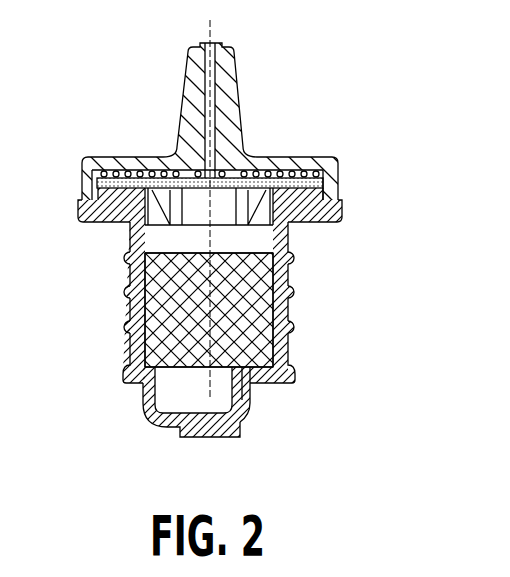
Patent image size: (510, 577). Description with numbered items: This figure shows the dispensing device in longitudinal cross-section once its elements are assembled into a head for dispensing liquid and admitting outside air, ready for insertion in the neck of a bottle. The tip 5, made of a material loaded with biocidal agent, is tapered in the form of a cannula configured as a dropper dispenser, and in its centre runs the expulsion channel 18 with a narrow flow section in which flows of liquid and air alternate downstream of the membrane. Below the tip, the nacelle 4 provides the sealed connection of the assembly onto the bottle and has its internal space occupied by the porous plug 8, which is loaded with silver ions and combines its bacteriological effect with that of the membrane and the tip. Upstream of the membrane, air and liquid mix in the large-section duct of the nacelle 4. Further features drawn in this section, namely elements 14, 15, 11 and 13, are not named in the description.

The expulsion channel 18 is at (215, 103).
The tip 5 is at (120, 172).
The flange 14 is at (333, 222).
The nacelle 4 is at (130, 347).
The thread ridges 15 is at (123, 293).
The porous plug 8 is at (293, 330).
The base 11 is at (187, 440).
The spout wall 13 is at (250, 403).